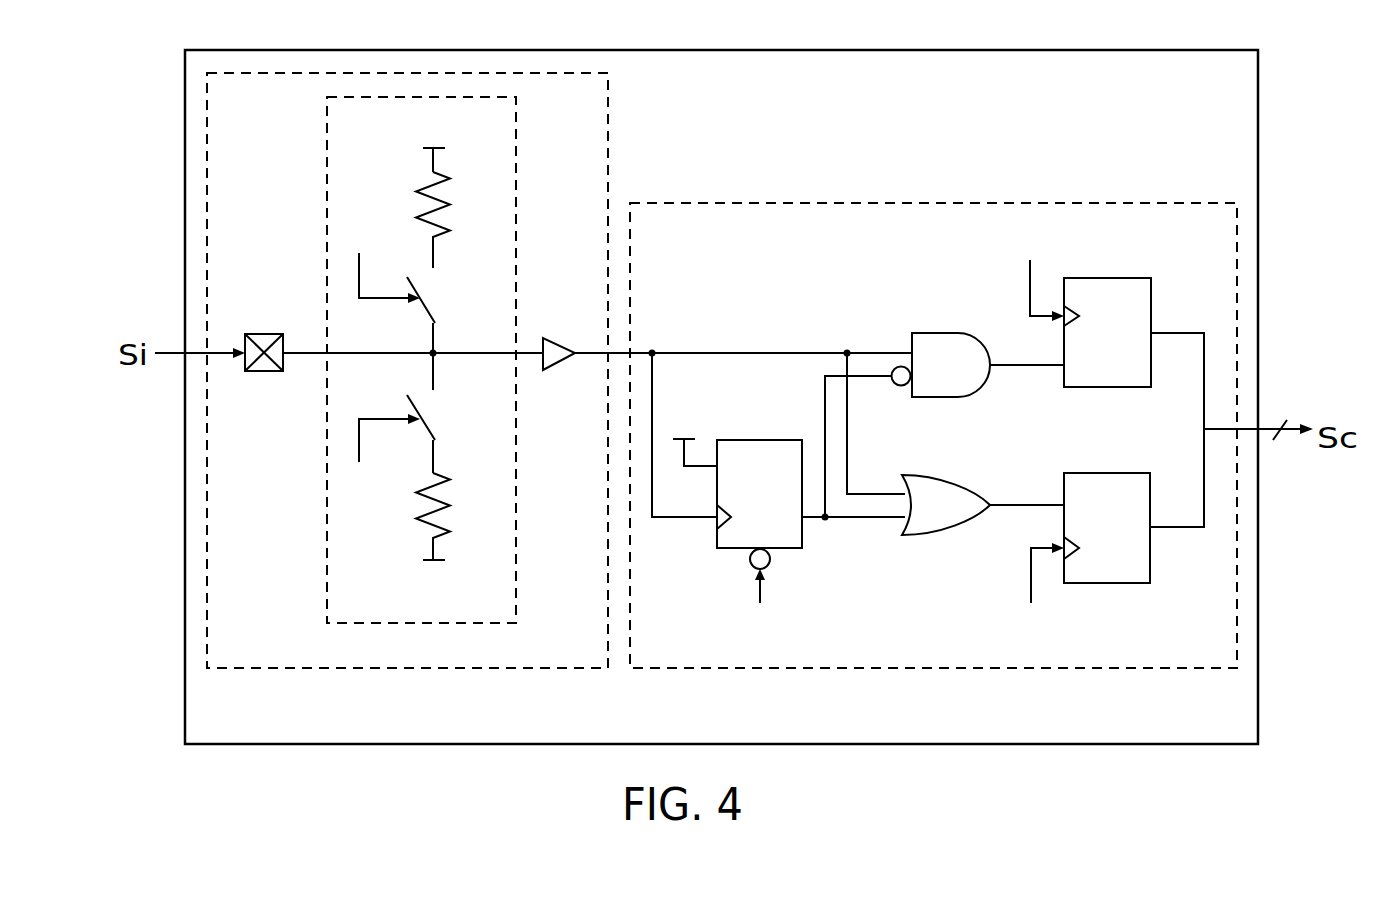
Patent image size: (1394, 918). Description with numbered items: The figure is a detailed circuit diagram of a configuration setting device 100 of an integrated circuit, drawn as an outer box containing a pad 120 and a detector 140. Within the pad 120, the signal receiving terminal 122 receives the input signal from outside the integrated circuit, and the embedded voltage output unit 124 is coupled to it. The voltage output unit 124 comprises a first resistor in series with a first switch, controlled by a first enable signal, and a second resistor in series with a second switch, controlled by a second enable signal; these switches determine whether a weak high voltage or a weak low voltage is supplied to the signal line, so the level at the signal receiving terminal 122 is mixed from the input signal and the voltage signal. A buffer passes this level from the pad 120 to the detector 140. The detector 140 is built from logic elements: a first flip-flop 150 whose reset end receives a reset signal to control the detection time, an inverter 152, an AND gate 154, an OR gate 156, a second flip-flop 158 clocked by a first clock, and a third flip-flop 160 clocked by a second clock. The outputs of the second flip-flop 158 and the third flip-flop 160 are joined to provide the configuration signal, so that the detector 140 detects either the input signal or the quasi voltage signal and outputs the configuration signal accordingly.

The configuration setting device 100 is at (1125, 745).
The pad 120 is at (522, 670).
The signal receiving terminal 122 is at (257, 372).
The voltage output unit 124 is at (518, 577).
The detector 140 is at (777, 670).
The first flip-flop 150 is at (790, 550).
The inverter 152 is at (903, 387).
The AND gate 154 is at (975, 388).
The OR gate 156 is at (940, 538).
The second flip-flop 158 is at (1113, 388).
The third flip-flop 160 is at (1135, 584).